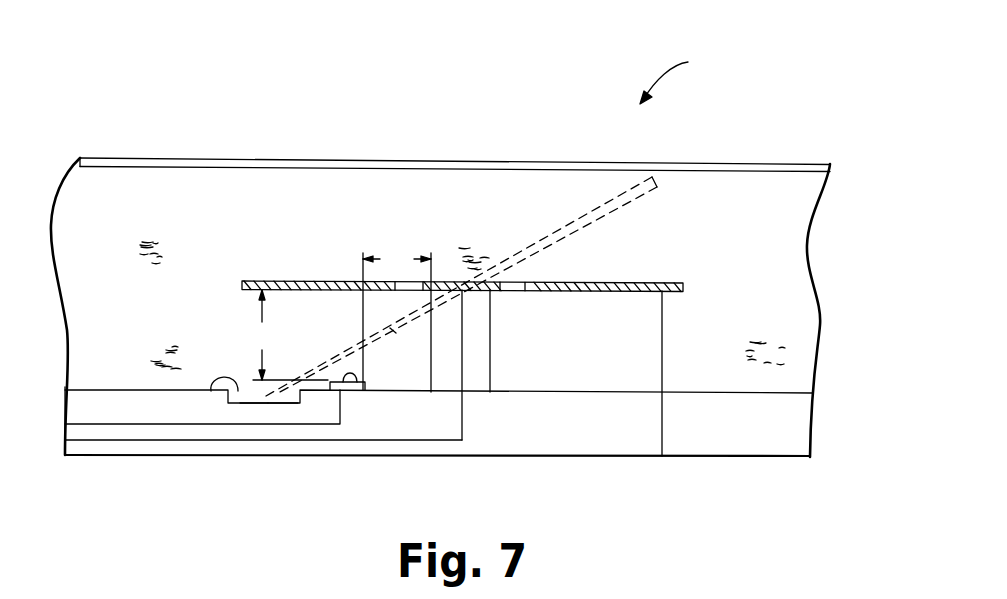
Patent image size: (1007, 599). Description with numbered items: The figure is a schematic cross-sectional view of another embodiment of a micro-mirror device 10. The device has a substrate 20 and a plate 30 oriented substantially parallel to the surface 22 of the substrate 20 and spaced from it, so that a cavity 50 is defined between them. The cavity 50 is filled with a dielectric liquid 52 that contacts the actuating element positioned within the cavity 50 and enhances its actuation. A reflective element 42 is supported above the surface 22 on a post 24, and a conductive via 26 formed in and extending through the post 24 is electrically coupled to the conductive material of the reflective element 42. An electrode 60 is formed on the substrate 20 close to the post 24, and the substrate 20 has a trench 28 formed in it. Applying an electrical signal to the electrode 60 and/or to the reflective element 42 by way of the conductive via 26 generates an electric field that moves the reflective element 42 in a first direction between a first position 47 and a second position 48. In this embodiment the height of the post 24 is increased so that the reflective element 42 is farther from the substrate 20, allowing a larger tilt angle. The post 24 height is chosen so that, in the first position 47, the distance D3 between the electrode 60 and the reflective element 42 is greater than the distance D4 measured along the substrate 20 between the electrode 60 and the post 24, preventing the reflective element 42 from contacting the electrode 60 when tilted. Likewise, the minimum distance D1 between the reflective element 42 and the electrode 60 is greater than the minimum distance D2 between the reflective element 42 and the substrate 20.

The micro-mirror device 10 is at (679, 78).
The substrate 20 is at (792, 428).
The surface of substrate 22 is at (785, 393).
The post 24 is at (492, 378).
The conductive via 26 is at (462, 365).
The trench 28 is at (211, 391).
The plate 30 is at (783, 164).
The reflective element 42 is at (277, 280).
The first position 47 is at (662, 456).
The second position 48 is at (393, 330).
The cavity 50 is at (83, 318).
The dielectric liquid 52 is at (467, 248).
The electrode 60 is at (357, 392).
The minimum distance between reflective element and electrode D1 is at (289, 403).
The minimum distance between reflective element and substrate D2 is at (268, 403).
The distance between electrode and reflective element D3 is at (288, 335).
The distance between electrode and post D4 is at (397, 320).